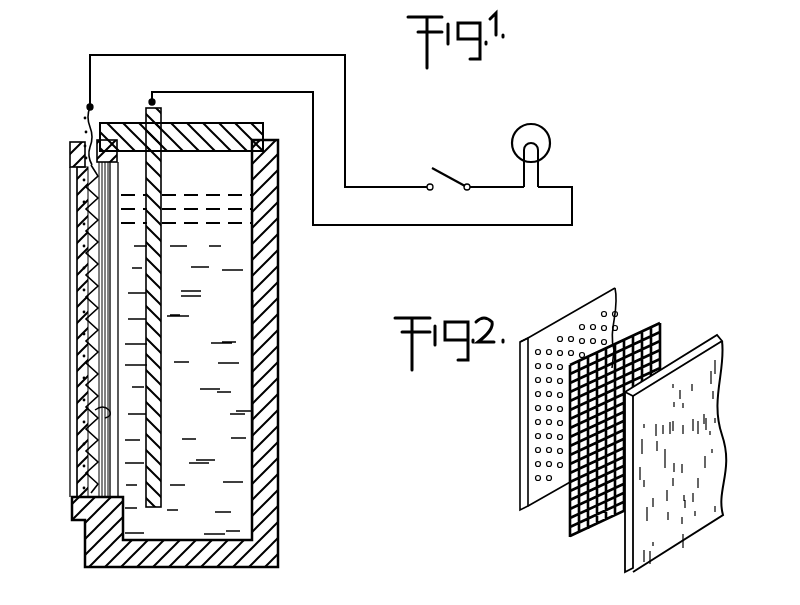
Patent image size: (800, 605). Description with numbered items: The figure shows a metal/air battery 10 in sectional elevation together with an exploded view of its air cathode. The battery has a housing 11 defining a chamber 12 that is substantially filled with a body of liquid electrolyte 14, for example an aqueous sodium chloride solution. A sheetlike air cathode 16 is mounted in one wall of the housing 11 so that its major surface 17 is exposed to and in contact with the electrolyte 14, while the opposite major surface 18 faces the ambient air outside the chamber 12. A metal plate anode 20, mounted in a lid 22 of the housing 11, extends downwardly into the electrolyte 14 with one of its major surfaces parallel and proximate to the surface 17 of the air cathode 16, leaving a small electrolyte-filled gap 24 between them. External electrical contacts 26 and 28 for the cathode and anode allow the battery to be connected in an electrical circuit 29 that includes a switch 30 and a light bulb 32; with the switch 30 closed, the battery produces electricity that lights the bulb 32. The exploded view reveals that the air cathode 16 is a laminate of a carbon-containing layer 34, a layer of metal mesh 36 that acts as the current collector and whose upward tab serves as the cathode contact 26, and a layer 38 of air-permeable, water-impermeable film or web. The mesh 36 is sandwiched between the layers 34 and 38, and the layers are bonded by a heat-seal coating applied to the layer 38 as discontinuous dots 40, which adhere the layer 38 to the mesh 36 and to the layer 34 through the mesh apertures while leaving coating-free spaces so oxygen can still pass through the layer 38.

In FIG. 1, the metal/air battery 10 is at (290, 318).
In FIG. 1, the housing 11 is at (265, 372).
In FIG. 1, the chamber 12 is at (246, 434).
In FIG. 1, the liquid electrolyte 14 is at (228, 282).
In FIG. 1, the air cathode 16 is at (80, 462).
In FIG. 1, the cathode major surface 17 is at (105, 412).
In FIG. 1, the cathode major surface 18 is at (78, 375).
In FIG. 1, the anode 20 is at (147, 282).
In FIG. 1, the lid 22 is at (185, 155).
In FIG. 1, the electrolyte-filled gap 24 is at (128, 330).
In FIG. 1, the cathode contact 26 is at (90, 107).
In FIG. 1, the anode contact 28 is at (152, 102).
In FIG. 1, the electrical circuit 29 is at (453, 232).
In FIG. 1, the switch 30 is at (441, 167).
In FIG. 1, the light bulb 32 is at (533, 124).
In FIG. 1, the carbon-containing layer 34 is at (105, 367).
In FIG. 2, the carbon-containing layer 34 is at (643, 537).
In FIG. 1, the metal mesh layer 36 is at (92, 180).
In FIG. 2, the metal mesh layer 36 is at (642, 322).
In FIG. 1, the air-permeable water-impermeable layer 38 is at (78, 243).
In FIG. 2, the air-permeable water-impermeable layer 38 is at (520, 400).
In FIG. 2, the heat-seal coating dots 40 is at (570, 345).